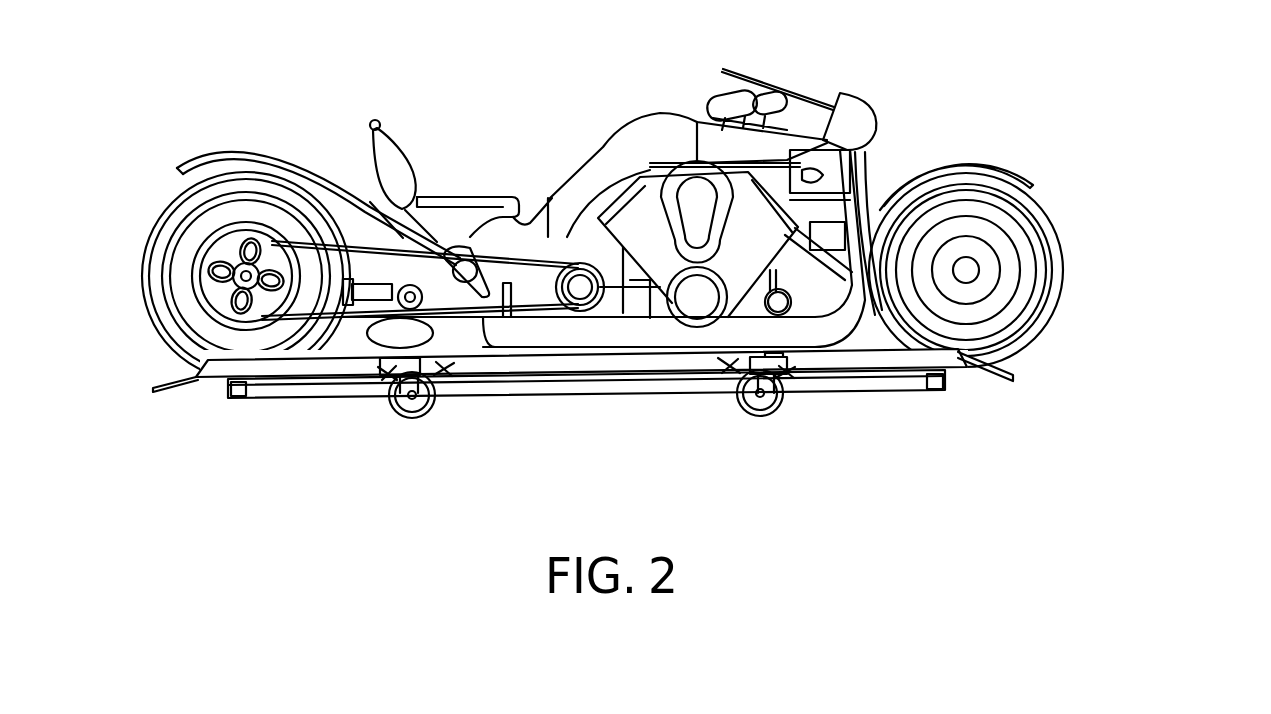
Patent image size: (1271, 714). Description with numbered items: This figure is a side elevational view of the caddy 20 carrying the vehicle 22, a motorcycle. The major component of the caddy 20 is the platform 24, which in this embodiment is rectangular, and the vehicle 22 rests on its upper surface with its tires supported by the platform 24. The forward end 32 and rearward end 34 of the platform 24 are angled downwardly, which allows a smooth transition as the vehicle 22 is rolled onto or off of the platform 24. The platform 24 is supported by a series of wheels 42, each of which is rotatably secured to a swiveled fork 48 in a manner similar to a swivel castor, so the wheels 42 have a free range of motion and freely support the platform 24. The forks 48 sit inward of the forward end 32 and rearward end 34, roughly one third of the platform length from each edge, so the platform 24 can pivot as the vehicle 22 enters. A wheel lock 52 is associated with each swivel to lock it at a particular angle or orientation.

The caddy 20 is at (1087, 272).
The vehicle 22 is at (882, 143).
The platform 24 is at (565, 393).
The forward end 32 is at (955, 370).
The rearward end 34 is at (170, 392).
The wheel 42 is at (408, 418).
The swiveled fork 48 is at (397, 372).
The wheel lock 52 is at (445, 368).